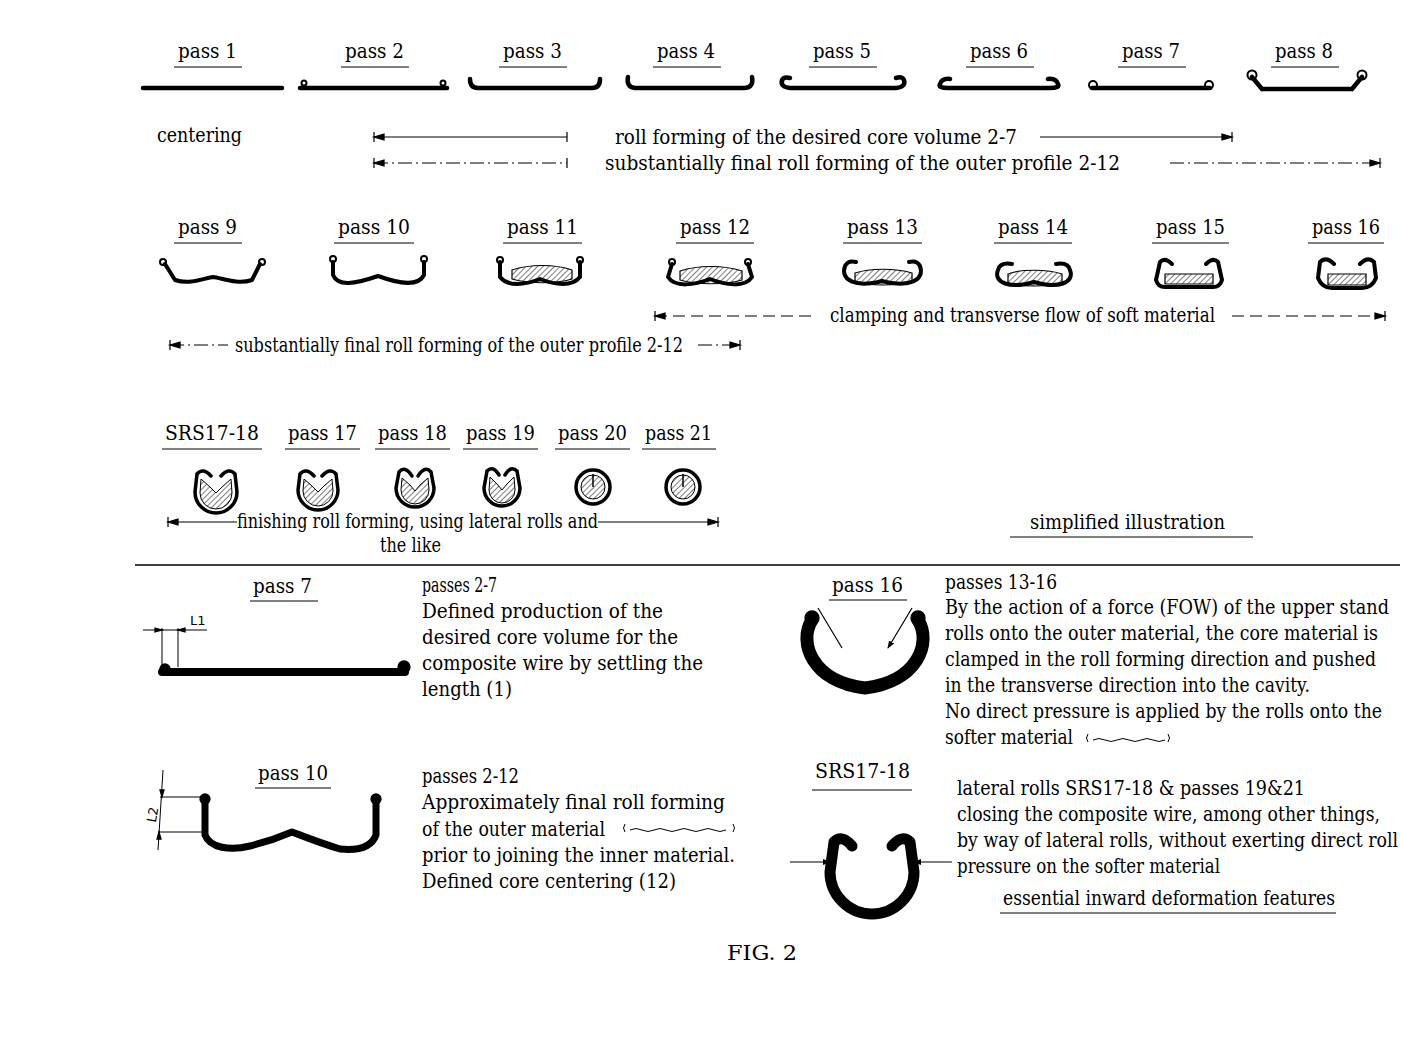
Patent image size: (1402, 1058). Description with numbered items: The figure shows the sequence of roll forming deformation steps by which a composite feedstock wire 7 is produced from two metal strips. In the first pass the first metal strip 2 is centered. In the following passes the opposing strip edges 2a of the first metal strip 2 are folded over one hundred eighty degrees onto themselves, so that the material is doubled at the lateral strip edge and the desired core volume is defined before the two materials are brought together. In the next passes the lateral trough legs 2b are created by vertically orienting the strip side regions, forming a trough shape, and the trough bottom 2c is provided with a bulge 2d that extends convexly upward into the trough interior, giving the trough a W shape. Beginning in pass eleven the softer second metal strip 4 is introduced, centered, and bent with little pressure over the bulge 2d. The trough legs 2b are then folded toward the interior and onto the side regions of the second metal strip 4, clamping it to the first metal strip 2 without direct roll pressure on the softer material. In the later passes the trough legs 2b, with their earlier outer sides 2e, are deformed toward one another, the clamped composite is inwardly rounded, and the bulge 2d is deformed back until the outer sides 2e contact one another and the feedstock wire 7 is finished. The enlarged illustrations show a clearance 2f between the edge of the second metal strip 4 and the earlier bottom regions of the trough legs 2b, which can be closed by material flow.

The first metal strip 2 is at (214, 90).
The strip edges 2a is at (308, 90).
The trough legs 2b is at (1254, 84).
The trough bottom 2c is at (213, 284).
The bulge 2d is at (375, 284).
The outer sides 2e is at (214, 480).
The clearance 2f is at (806, 642).
The second metal strip 4 is at (560, 270).
The feedstock wire 7 is at (701, 482).